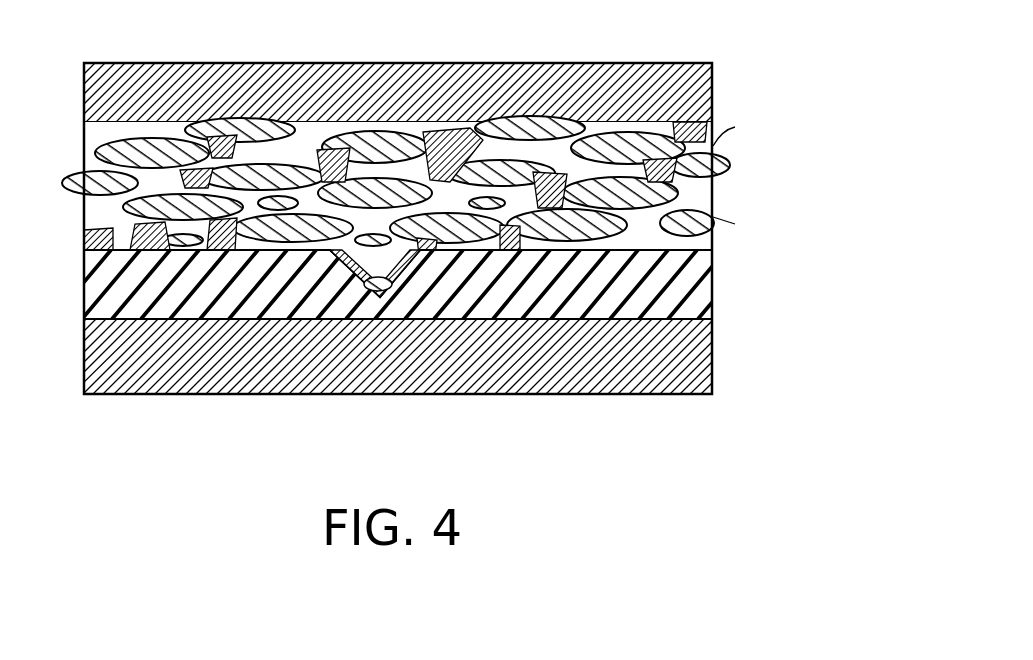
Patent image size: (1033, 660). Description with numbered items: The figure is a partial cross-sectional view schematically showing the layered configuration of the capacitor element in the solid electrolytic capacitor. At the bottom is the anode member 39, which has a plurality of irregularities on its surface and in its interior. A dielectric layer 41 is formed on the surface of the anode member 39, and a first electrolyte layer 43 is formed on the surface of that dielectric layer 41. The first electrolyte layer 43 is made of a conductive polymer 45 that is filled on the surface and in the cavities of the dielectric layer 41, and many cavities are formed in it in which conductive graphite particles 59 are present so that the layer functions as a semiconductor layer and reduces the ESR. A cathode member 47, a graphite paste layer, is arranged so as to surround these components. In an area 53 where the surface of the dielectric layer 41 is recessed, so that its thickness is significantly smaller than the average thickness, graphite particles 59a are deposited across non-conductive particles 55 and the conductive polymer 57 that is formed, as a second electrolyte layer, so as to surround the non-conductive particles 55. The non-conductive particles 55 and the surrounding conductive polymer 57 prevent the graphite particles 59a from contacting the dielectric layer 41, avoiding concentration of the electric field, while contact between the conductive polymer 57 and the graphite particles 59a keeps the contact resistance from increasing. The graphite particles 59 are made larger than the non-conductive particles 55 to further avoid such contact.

The anode member 39 is at (153, 367).
The dielectric layer 41 is at (125, 305).
The first electrolyte layer 43 is at (652, 232).
The conductive polymer 45 is at (641, 147).
The cathode member 47 is at (110, 88).
The recess 53 is at (446, 280).
The non-conductive particles 55 is at (233, 153).
The conductive polymer 57 is at (333, 262).
The graphite particles 59 is at (462, 163).
The graphite particles 59a is at (418, 274).